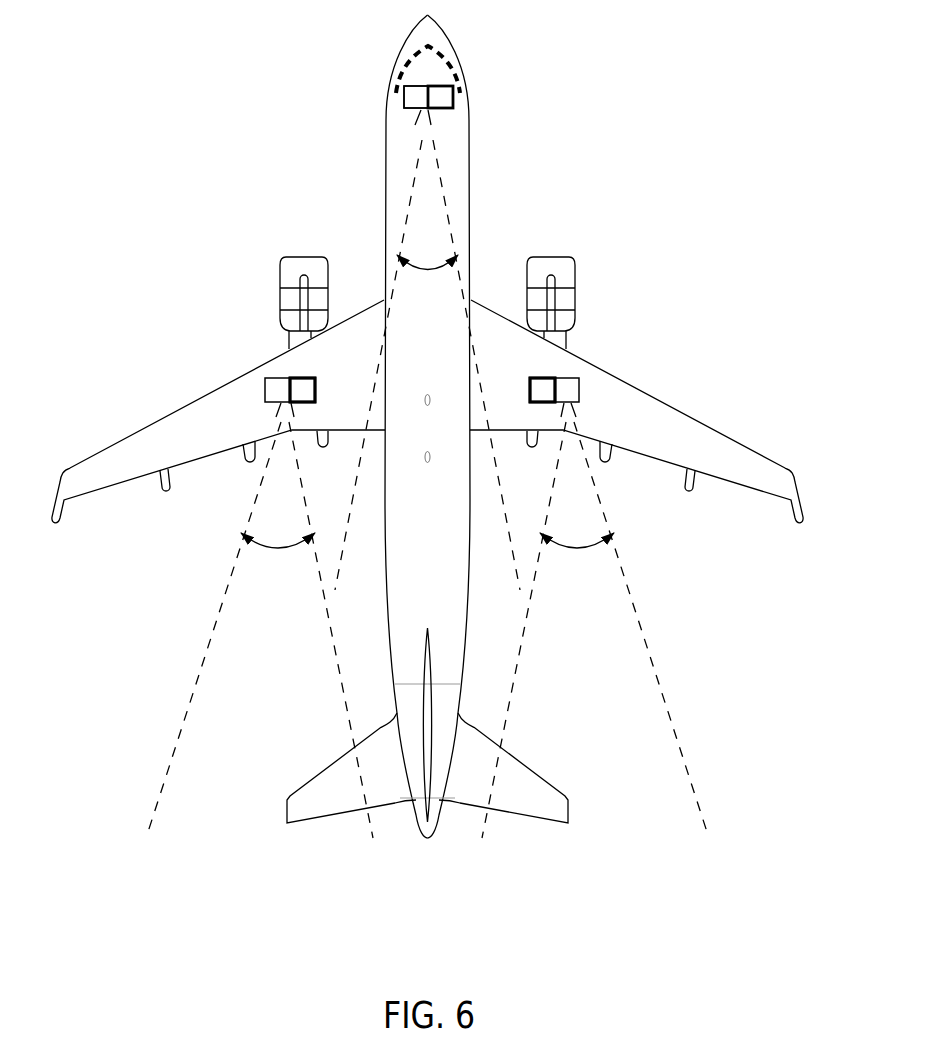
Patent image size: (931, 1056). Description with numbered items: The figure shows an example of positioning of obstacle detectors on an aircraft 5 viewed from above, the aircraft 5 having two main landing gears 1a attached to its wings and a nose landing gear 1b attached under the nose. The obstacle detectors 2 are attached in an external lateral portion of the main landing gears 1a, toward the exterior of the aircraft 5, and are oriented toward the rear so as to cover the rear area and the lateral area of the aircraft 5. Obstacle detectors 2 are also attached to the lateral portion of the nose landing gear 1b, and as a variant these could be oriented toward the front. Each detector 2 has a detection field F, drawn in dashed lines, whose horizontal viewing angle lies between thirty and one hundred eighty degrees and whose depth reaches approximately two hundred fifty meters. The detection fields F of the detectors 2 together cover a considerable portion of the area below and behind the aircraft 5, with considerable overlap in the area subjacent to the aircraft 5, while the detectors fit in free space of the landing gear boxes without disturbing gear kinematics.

The aircraft 5 is at (240, 108).
The main landing gear 1a is at (307, 378).
The nose landing gear 1b is at (460, 90).
The obstacle detector 2 is at (397, 89).
The detection field F is at (446, 282).